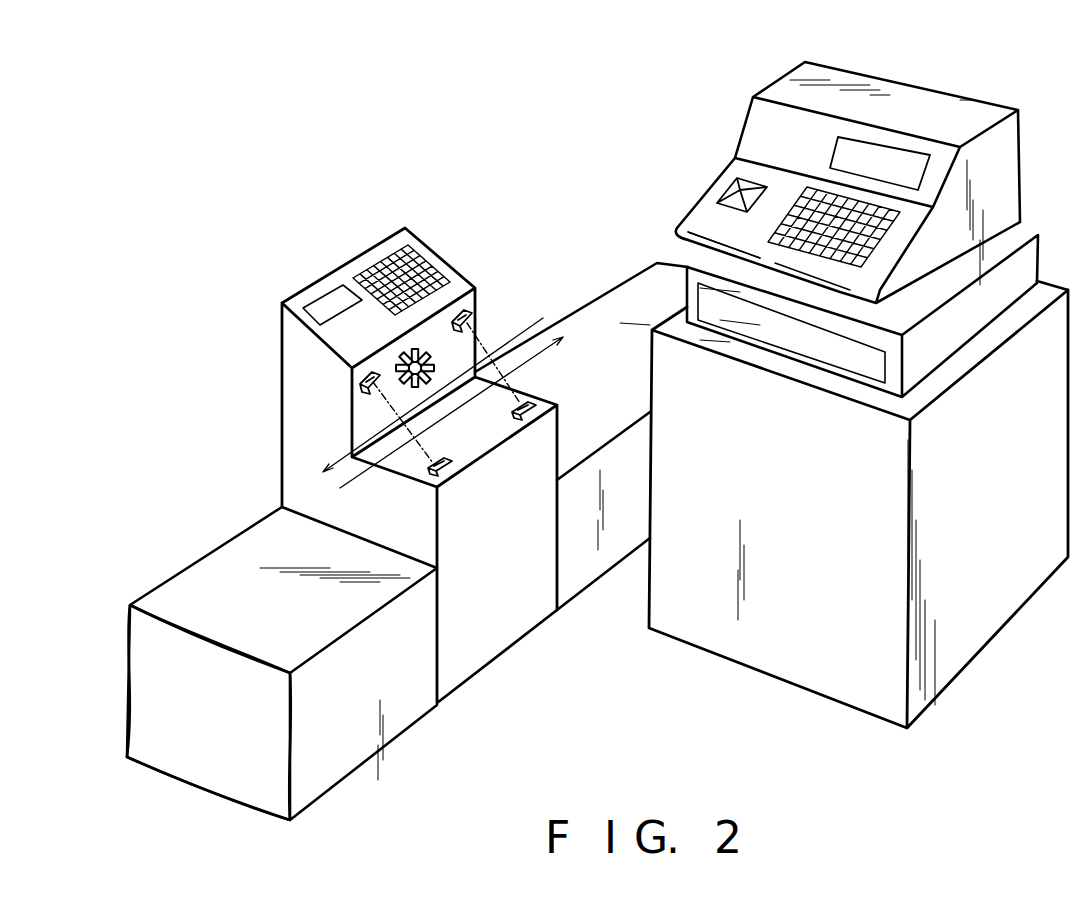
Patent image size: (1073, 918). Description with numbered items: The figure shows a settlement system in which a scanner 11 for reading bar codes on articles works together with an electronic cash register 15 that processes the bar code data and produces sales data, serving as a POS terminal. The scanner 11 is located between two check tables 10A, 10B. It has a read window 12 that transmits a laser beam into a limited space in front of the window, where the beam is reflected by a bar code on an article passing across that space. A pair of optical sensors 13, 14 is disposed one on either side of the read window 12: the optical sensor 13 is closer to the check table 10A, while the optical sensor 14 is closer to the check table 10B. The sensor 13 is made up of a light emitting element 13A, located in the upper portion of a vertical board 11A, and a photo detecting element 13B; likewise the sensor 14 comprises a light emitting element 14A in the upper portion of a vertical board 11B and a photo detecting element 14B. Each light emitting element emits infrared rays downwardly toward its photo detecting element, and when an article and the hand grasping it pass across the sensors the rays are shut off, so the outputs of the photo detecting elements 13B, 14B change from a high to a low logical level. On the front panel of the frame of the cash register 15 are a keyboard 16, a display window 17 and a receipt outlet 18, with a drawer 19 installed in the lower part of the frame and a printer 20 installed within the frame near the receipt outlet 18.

The check table 10A is at (643, 283).
The check table 10B is at (213, 565).
The scanner 11 is at (295, 421).
The vertical board 11A is at (367, 410).
The vertical board 11B is at (400, 457).
The read window 12 is at (403, 353).
The optical sensor 13 is at (500, 466).
The light emitting element 13A is at (473, 318).
The photo detecting element 13B is at (537, 403).
The optical sensor 14 is at (454, 500).
The light emitting element 14A is at (360, 377).
The photo detecting element 14B is at (432, 483).
The electronic cash register 15 is at (753, 125).
The keyboard 16 is at (865, 240).
The display window 17 is at (903, 157).
The receipt outlet 18 is at (727, 188).
The drawer 19 is at (832, 350).
The printer 20 is at (717, 222).